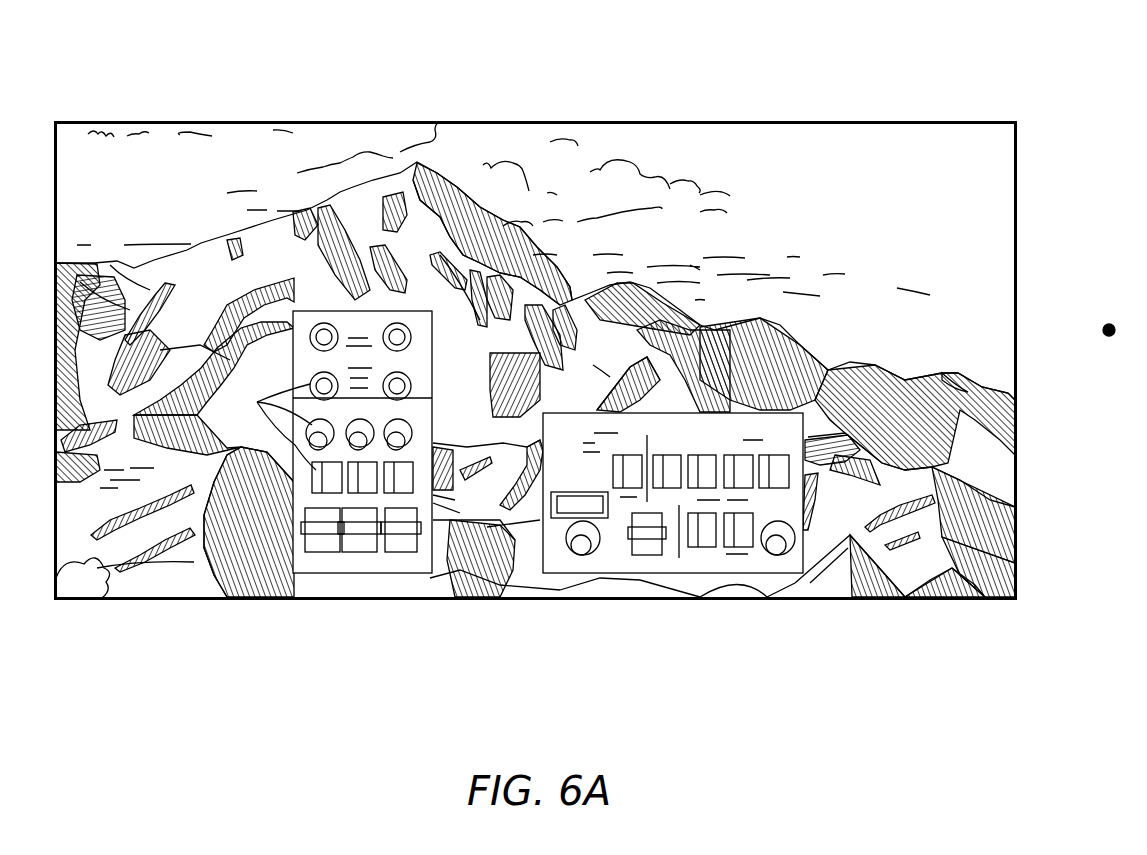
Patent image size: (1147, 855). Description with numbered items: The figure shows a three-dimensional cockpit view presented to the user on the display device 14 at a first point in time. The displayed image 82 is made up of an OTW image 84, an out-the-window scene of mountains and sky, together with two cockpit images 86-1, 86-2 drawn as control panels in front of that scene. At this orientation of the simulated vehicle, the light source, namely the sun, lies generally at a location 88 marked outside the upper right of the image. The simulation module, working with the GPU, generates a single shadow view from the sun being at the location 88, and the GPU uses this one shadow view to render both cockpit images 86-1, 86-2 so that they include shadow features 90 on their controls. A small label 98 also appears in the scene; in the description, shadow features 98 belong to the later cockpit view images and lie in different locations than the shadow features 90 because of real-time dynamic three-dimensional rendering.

The display device 14 is at (131, 120).
The image 82 is at (628, 62).
The OTW image 84 is at (953, 182).
The cockpit image 86-1 is at (361, 558).
The cockpit image 86-2 is at (672, 563).
The location 88 is at (1109, 324).
The shadow features 90 is at (588, 468).
The shadow features 98 is at (454, 501).